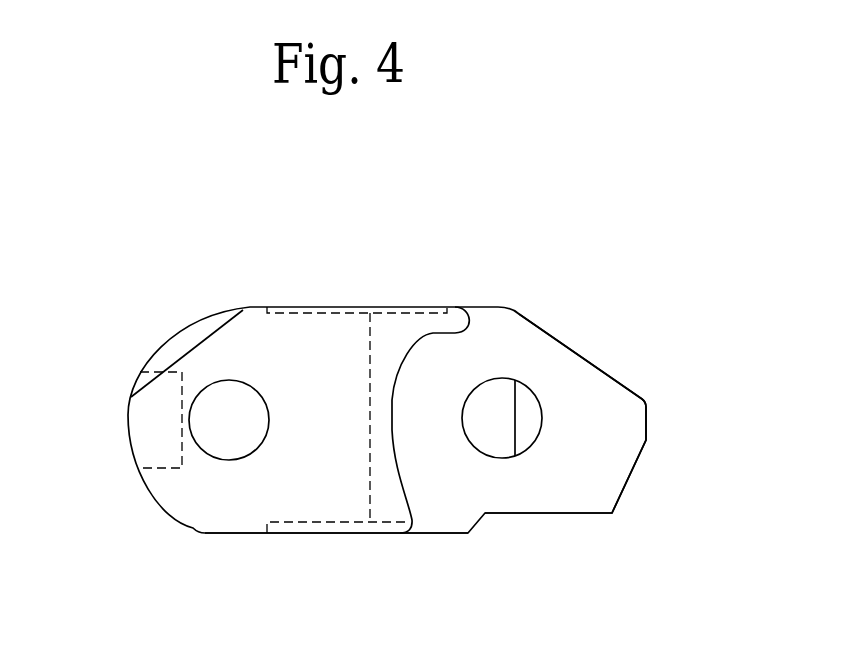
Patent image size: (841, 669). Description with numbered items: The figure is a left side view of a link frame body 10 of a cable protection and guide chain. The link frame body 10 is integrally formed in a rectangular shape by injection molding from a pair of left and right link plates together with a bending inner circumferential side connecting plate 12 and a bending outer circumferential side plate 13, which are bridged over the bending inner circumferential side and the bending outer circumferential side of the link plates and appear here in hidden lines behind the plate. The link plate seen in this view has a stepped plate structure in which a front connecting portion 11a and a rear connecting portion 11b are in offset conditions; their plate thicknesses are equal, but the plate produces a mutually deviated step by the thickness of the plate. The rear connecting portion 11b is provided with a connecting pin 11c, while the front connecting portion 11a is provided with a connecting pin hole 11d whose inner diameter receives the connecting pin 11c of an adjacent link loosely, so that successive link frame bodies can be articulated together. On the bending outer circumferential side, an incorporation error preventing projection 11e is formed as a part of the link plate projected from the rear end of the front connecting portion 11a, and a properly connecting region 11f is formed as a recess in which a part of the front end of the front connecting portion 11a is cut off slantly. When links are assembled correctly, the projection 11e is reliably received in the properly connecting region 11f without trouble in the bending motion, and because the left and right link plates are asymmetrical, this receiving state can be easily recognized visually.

The link frame body 10 is at (512, 308).
The front connecting portion 11a is at (228, 513).
The rear connecting portion 11b is at (613, 400).
The connecting pin 11c is at (493, 445).
The connecting pin hole 11d is at (229, 458).
The incorporation error preventing projection 11e is at (455, 312).
The properly connecting region 11f is at (190, 345).
The bending inner circumferential side connecting plate 12 is at (325, 525).
The bending outer circumferential side plate 13 is at (308, 310).